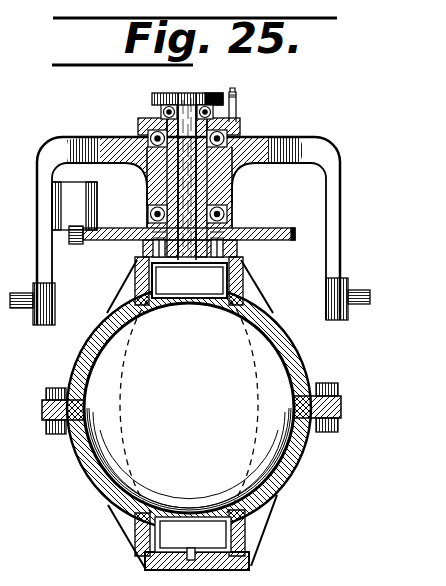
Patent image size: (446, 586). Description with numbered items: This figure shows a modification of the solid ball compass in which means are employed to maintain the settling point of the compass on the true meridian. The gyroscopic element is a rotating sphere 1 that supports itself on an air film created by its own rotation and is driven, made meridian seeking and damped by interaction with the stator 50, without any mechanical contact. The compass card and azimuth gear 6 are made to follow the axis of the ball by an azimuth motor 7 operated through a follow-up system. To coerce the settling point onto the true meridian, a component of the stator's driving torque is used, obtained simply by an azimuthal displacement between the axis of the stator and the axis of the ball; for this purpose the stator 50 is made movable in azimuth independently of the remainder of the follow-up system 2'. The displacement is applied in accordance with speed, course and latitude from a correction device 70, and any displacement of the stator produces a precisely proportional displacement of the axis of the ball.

The rotating sphere 1 is at (189, 406).
The follow-up system 2' is at (194, 413).
The compass card and azimuth gear 6 is at (270, 227).
The azimuth motor 7 is at (74, 213).
The stator 50 is at (189, 280).
The correction device 70 is at (237, 97).